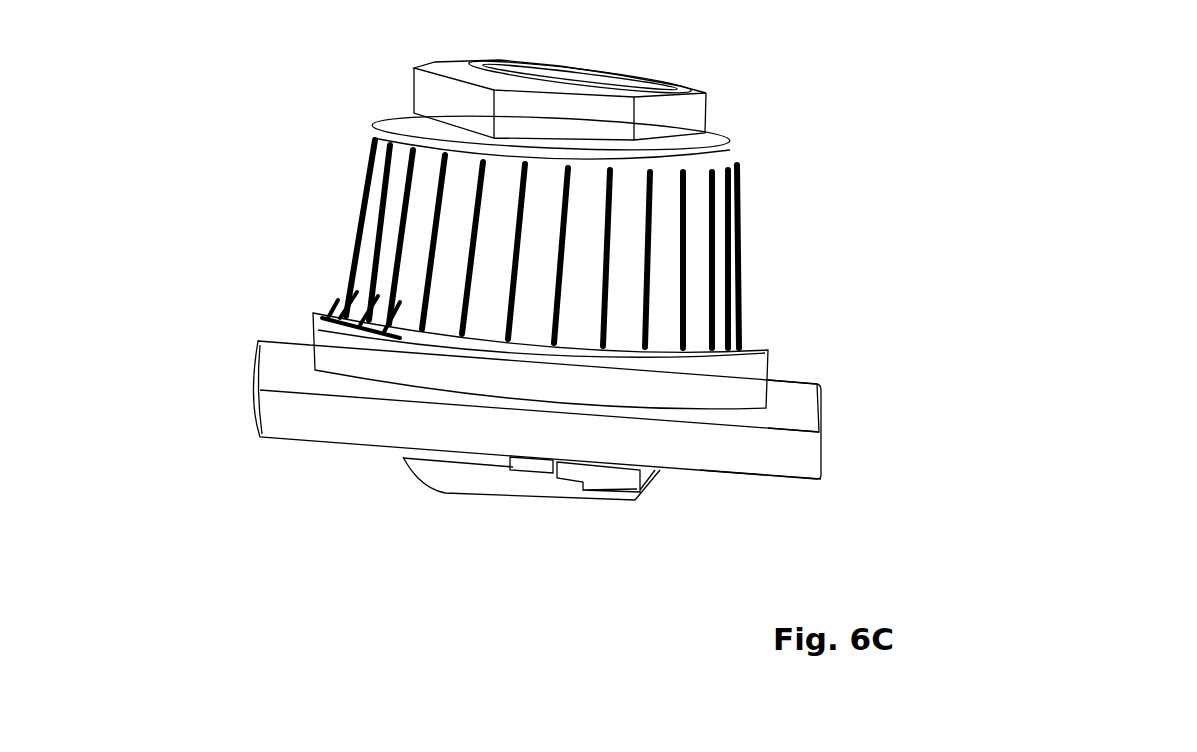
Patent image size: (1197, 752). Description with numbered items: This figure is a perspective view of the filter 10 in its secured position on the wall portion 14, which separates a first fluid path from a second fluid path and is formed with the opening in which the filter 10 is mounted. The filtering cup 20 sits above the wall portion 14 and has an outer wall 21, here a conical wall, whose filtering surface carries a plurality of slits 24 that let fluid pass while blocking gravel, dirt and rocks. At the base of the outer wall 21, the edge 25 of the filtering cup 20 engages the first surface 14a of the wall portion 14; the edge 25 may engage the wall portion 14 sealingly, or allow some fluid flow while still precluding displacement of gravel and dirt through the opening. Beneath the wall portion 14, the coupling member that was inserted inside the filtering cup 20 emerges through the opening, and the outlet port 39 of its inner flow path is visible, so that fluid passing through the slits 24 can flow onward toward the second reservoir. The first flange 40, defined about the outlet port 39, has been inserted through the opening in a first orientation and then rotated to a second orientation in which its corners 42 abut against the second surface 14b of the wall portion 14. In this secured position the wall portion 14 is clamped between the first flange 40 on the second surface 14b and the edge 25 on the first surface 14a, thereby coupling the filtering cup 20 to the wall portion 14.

The filter 10 is at (1068, 145).
The wall portion 14 is at (634, 410).
The first surface 14a is at (797, 405).
The second surface 14b is at (790, 480).
The filtering cup 20 is at (735, 155).
The outer wall 21 is at (740, 245).
The slits 24 is at (437, 235).
The edge 25 is at (310, 378).
The outlet port 39 is at (455, 498).
The first flange 40 is at (508, 483).
The corners 42 is at (538, 480).